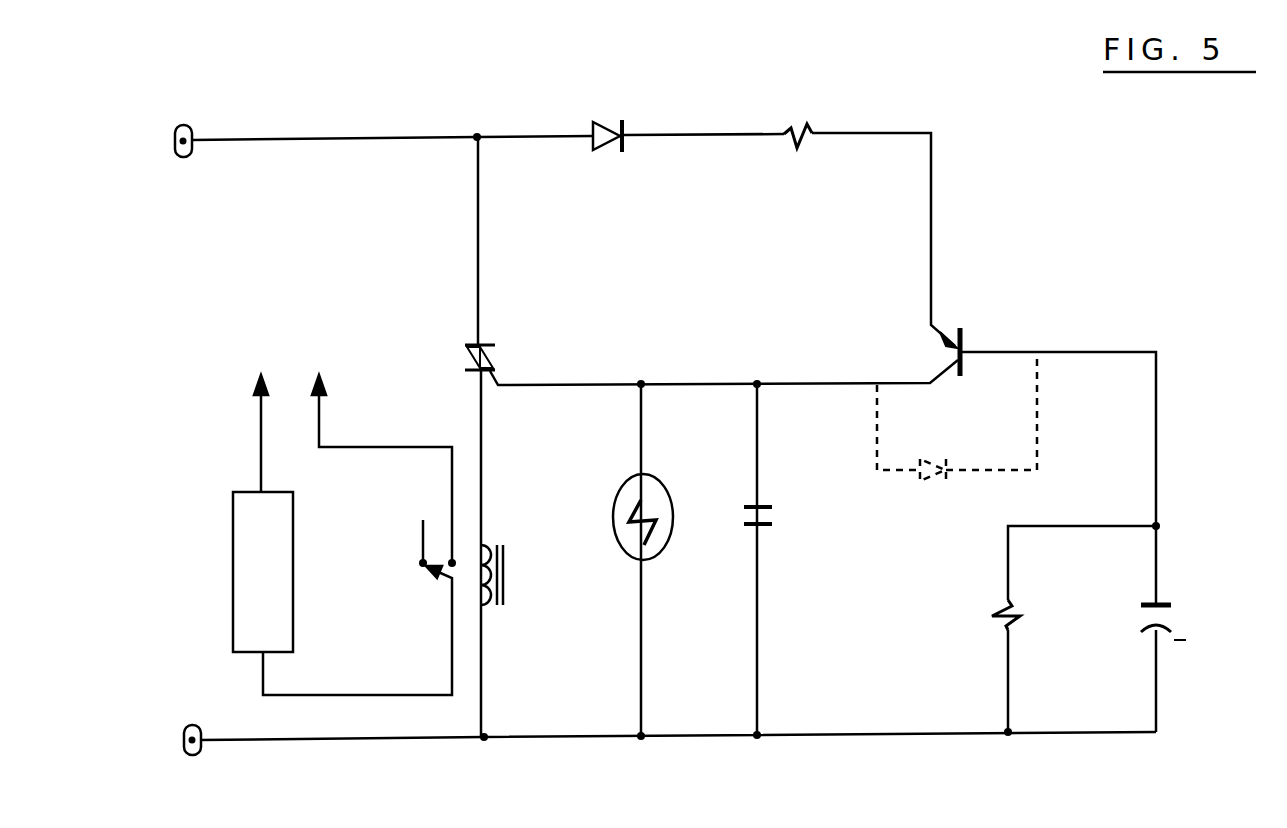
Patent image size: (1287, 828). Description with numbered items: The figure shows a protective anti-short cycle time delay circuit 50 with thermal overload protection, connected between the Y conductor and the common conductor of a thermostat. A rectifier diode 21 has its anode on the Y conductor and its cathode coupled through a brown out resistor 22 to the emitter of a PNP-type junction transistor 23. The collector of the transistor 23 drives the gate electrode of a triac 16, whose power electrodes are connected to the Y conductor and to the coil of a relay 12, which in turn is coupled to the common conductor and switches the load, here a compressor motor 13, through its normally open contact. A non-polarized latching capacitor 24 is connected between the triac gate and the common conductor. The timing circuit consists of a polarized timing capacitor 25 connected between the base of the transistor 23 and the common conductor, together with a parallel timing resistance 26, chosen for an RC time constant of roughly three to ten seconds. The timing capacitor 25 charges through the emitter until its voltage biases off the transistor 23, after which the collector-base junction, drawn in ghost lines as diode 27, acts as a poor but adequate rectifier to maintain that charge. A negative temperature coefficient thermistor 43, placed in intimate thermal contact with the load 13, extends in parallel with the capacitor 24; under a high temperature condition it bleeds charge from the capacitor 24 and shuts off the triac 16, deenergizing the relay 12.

The thermostat control circuit 50 is at (1197, 128).
The rectifier diode 21 is at (630, 112).
The brown out resistor 22 is at (819, 112).
The triac 16 is at (500, 350).
The PNP-type junction transistor 23 is at (968, 340).
The diode 27 is at (923, 462).
The relay 12 is at (500, 546).
The compressor motor 13 is at (296, 546).
The NTC thermistor 43 is at (674, 522).
The latching capacitor 24 is at (781, 520).
The timing resistance 26 is at (1026, 600).
The timing capacitor 25 is at (1180, 618).